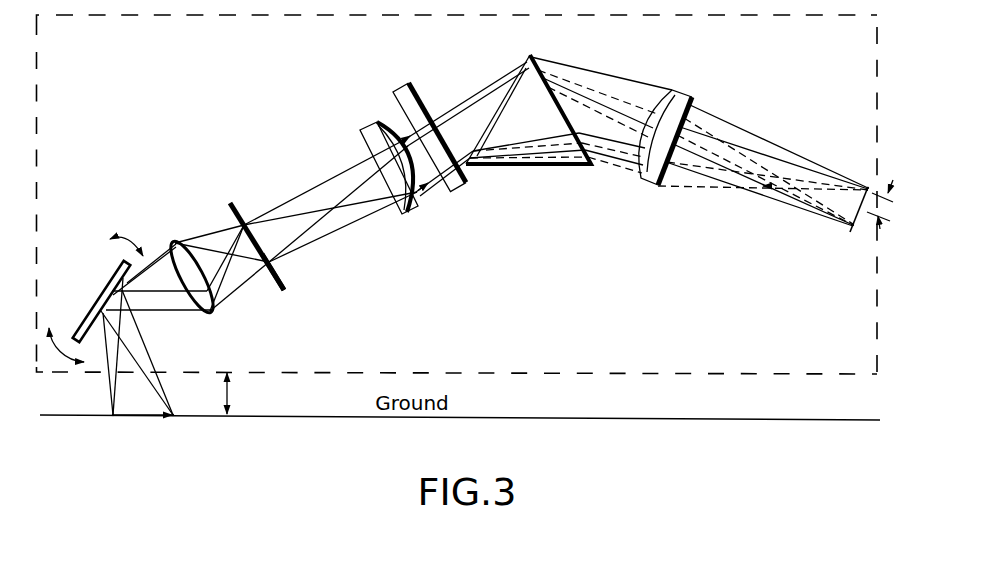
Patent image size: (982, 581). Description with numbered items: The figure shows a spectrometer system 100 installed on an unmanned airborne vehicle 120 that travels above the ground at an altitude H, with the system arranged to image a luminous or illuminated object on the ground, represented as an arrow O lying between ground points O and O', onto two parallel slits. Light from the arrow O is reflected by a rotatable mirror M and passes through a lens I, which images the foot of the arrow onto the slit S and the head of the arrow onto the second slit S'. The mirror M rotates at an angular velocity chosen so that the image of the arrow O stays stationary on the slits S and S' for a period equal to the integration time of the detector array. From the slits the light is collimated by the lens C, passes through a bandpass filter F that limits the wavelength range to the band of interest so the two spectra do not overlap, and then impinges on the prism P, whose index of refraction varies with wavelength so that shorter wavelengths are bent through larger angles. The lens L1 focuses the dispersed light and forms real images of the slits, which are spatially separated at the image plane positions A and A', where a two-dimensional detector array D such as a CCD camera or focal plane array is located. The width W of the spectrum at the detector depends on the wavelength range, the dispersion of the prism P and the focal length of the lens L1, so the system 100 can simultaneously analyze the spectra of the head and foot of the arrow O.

The spectrometer system 100 is at (318, 104).
The unmanned airborne vehicle 120 is at (680, 374).
The rotatable mirror M is at (96, 299).
The lens I is at (192, 266).
The slit S is at (252, 233).
The second slit S' is at (269, 292).
The lens C is at (385, 157).
The bandpass filter F is at (428, 126).
The prism P is at (528, 95).
The lens L1 is at (668, 123).
The two-dimensional detector array D is at (851, 239).
The image plane A is at (860, 235).
The image plane A' is at (857, 174).
The width of the real image W is at (885, 193).
The altitude H is at (237, 393).
The arrow O is at (113, 430).
The ground point O' is at (176, 430).